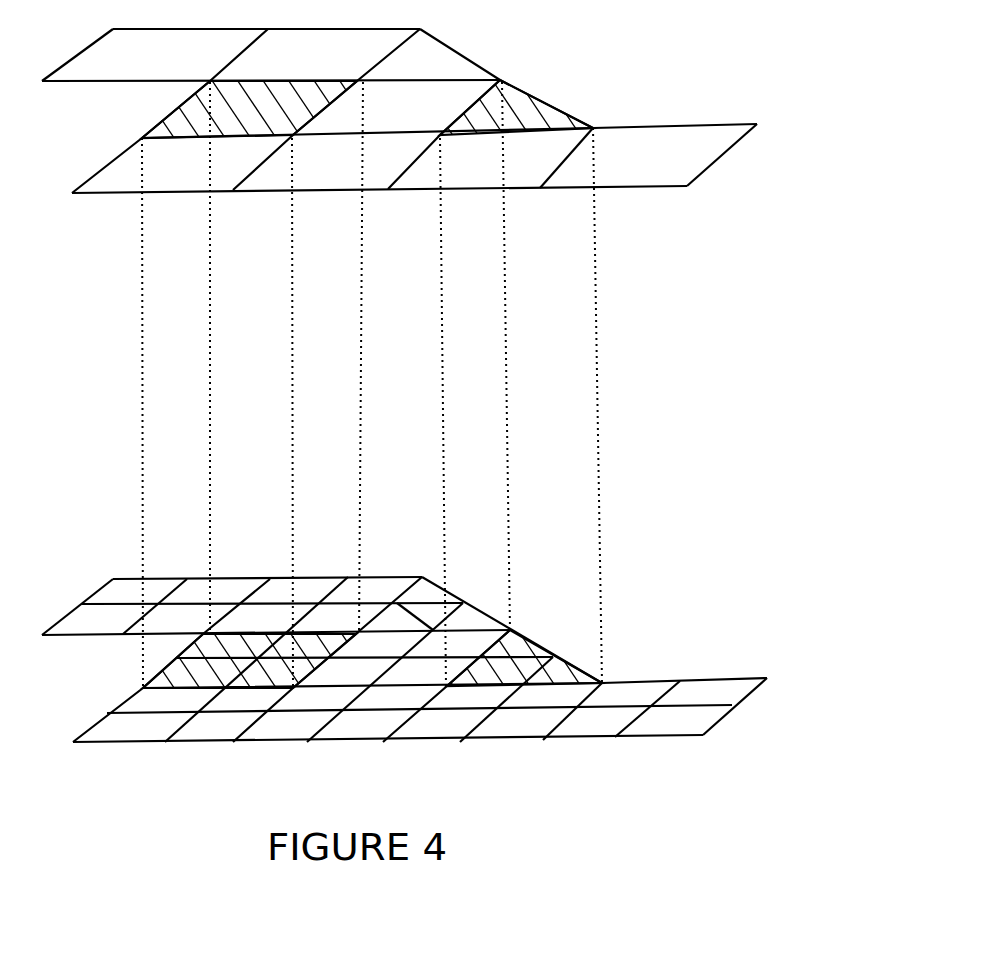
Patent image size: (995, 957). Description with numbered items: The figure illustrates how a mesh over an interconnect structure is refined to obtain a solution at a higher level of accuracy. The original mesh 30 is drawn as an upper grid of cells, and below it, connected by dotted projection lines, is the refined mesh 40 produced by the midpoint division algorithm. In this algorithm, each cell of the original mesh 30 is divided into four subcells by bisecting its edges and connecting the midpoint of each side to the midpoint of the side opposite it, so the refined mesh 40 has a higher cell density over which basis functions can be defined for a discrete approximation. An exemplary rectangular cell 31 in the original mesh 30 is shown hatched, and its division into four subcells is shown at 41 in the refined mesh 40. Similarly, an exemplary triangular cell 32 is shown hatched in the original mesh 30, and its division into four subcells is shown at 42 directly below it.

The original mesh 30 is at (775, 96).
The rectangular cell 31 is at (176, 117).
The triangular cell 32 is at (547, 105).
The refined mesh 40 is at (784, 654).
The division of rectangular cell into subcells 41 is at (187, 668).
The division of triangular cell into subcells 42 is at (537, 645).